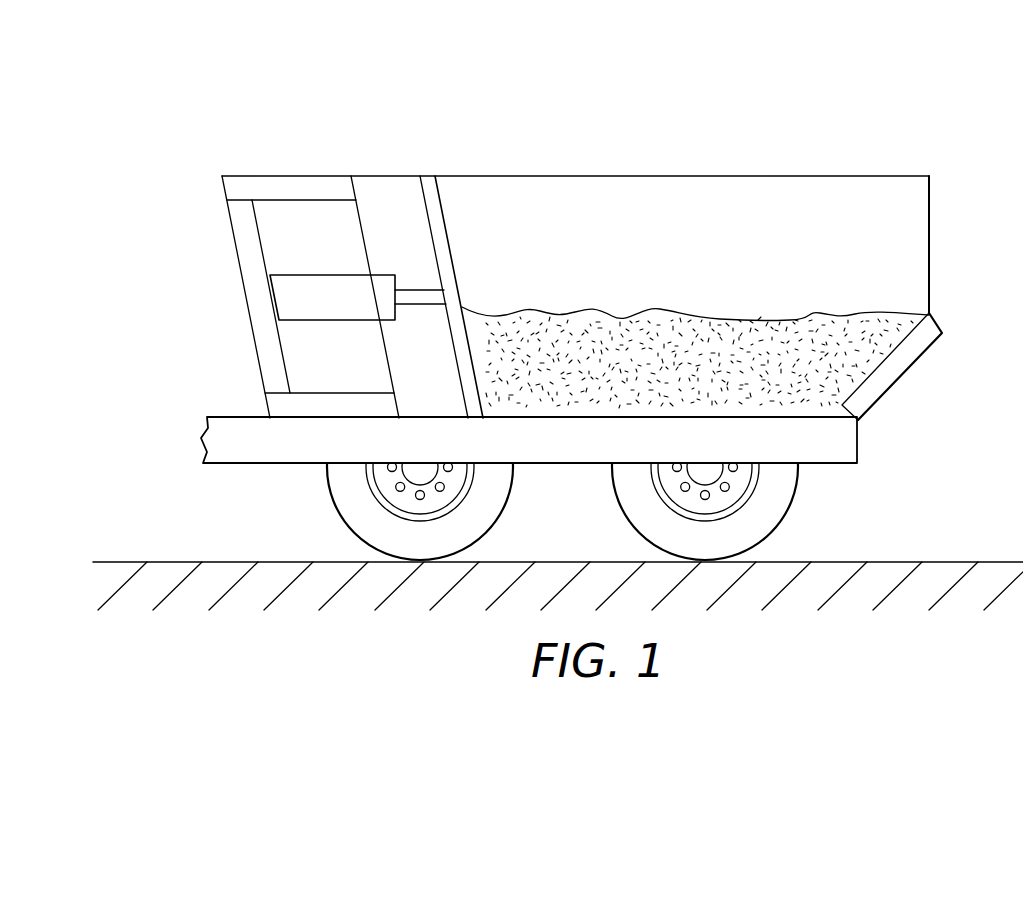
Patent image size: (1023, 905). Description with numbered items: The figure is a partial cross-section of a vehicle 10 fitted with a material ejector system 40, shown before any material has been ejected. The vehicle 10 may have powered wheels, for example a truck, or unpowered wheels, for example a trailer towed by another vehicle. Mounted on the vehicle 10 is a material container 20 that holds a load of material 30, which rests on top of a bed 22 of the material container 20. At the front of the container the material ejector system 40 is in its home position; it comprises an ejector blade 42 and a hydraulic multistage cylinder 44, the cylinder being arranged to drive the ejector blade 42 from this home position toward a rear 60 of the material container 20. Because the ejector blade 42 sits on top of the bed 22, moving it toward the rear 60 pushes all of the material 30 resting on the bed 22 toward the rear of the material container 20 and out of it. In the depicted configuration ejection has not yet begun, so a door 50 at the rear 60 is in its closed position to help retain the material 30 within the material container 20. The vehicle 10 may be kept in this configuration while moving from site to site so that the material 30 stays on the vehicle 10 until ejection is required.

The vehicle 10 is at (239, 101).
The material container 20 is at (793, 186).
The bed 22 is at (803, 421).
The material 30 is at (843, 322).
The material ejector system 40 is at (380, 186).
The ejector blade 42 is at (447, 211).
The hydraulic multistage cylinder 44 is at (318, 287).
The door 50 is at (903, 373).
The rear 60 is at (933, 186).